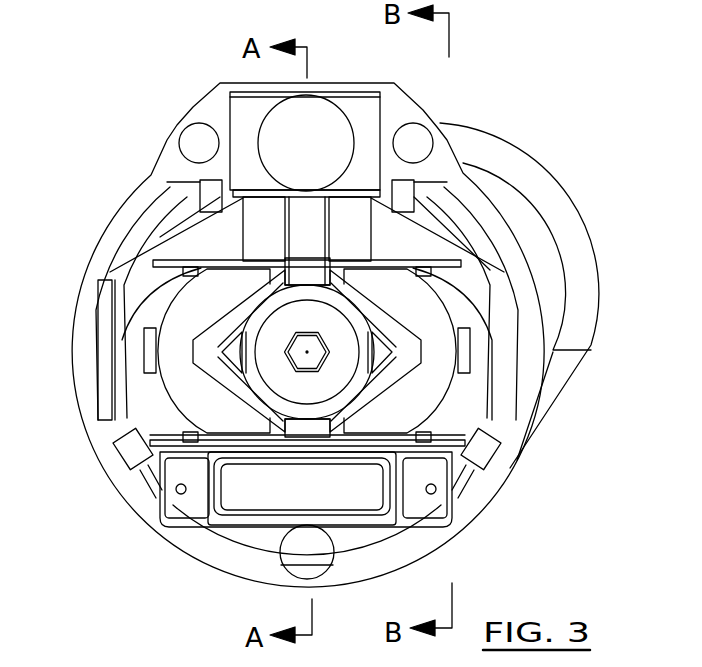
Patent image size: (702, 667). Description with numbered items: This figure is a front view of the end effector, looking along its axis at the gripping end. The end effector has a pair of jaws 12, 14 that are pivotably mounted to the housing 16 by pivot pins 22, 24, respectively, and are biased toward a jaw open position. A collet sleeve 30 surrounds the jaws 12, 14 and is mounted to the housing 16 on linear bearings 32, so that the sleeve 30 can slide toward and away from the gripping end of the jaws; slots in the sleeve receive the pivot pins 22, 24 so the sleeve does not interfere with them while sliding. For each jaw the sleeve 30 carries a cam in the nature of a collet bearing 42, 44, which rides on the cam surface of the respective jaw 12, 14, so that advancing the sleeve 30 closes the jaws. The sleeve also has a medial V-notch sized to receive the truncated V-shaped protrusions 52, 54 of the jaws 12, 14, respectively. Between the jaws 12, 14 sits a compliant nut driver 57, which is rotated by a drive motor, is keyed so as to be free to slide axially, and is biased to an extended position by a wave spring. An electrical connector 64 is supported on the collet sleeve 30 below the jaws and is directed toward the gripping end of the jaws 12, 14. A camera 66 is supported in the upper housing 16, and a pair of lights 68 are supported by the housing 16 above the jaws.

The jaw 12 is at (422, 311).
The jaw 14 is at (207, 311).
The housing 16 is at (85, 270).
The pivot pin 22 is at (460, 163).
The pivot pin 24 is at (198, 203).
The collet sleeve 30 is at (125, 296).
The linear bearings 32 is at (125, 452).
The collet bearing 42 is at (470, 356).
The collet bearing 44 is at (147, 354).
The truncated V-shaped protrusion 52 is at (365, 248).
The truncated V-shaped protrusion 54 is at (279, 248).
The compliant nut driver 57 is at (272, 372).
The electrical connector 64 is at (247, 505).
The camera 66 is at (360, 105).
The lights 68 is at (190, 133).